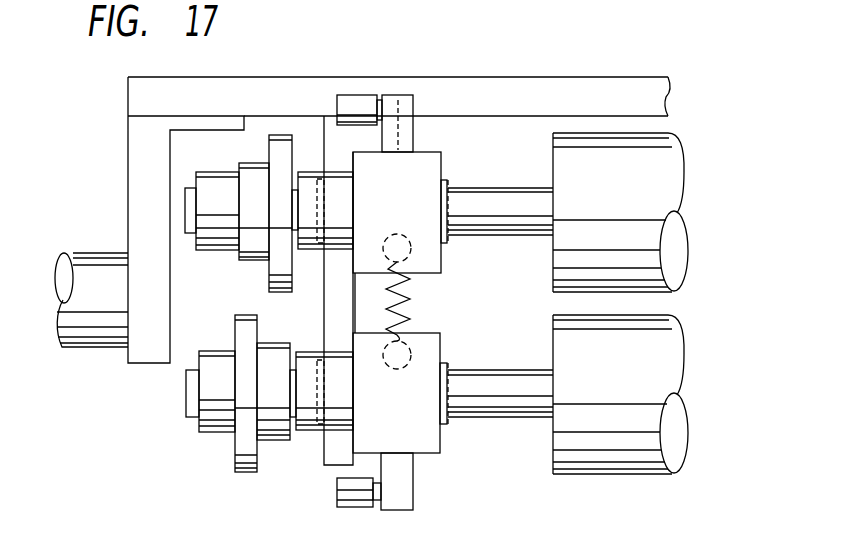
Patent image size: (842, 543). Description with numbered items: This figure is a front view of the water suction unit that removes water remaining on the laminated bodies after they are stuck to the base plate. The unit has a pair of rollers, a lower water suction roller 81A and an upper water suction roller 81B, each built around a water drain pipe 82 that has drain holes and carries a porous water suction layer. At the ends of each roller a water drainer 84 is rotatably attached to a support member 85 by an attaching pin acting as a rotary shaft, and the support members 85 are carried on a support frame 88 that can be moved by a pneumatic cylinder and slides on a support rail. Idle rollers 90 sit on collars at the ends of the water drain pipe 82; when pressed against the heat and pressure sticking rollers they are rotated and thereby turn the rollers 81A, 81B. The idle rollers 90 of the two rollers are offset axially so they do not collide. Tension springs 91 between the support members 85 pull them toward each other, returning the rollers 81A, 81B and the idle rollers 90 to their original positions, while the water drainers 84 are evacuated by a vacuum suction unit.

The support frame 88 is at (148, 96).
The idle rollers 90 is at (283, 158).
The water drainer 84 is at (425, 168).
The water drain pipe 82 is at (465, 388).
The support member 85 is at (338, 452).
The tension springs 91 is at (405, 300).
The lower water suction roller 81A is at (572, 338).
The upper water suction roller 81B is at (568, 163).